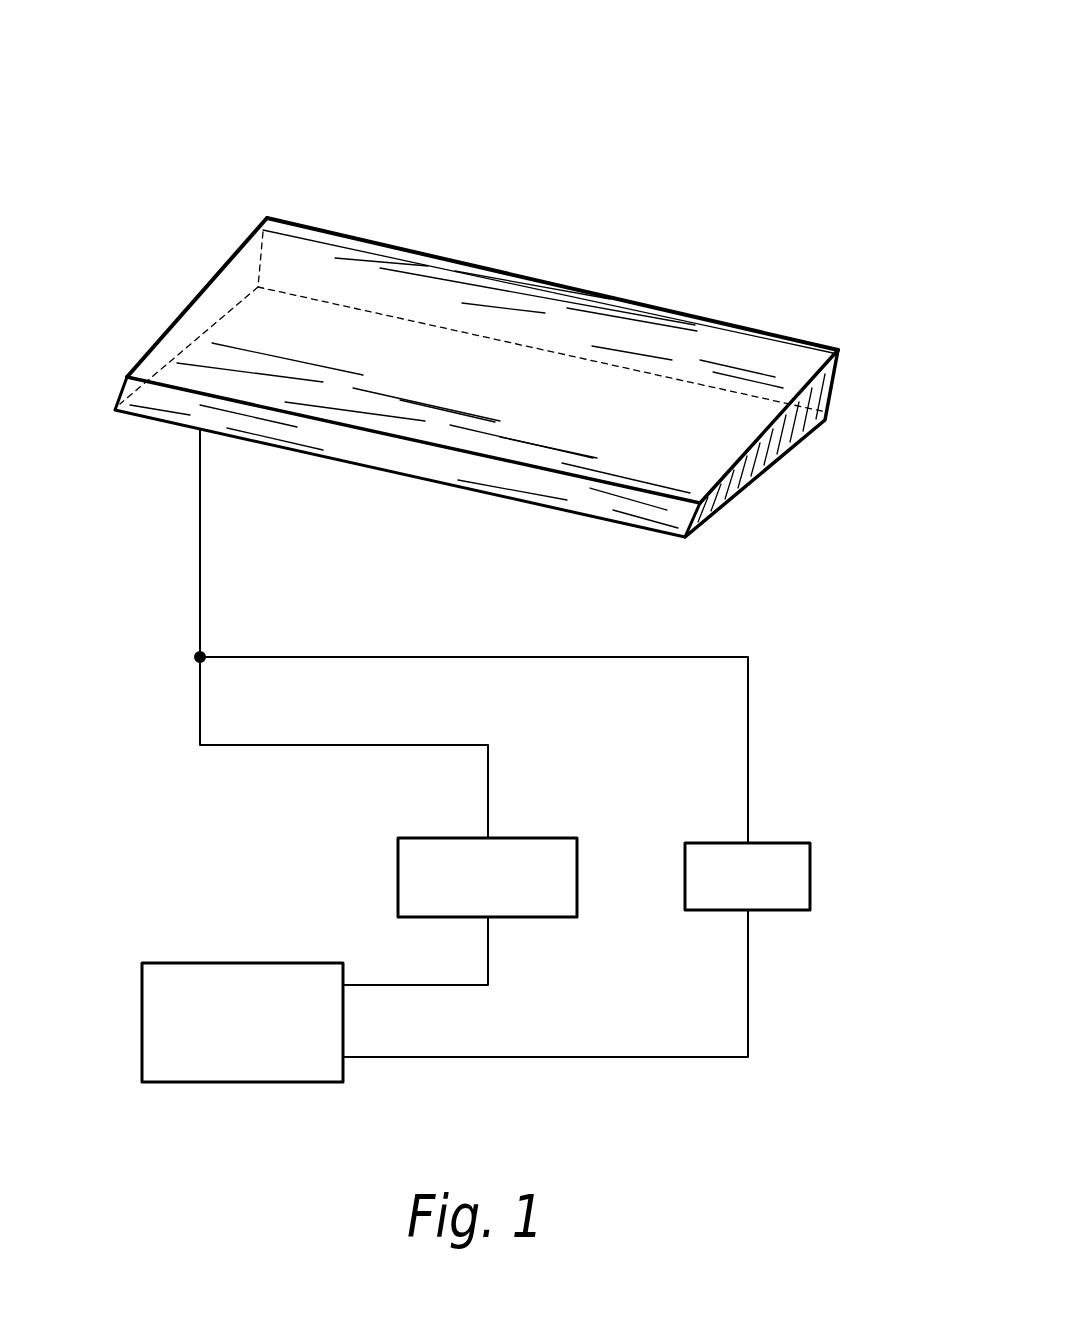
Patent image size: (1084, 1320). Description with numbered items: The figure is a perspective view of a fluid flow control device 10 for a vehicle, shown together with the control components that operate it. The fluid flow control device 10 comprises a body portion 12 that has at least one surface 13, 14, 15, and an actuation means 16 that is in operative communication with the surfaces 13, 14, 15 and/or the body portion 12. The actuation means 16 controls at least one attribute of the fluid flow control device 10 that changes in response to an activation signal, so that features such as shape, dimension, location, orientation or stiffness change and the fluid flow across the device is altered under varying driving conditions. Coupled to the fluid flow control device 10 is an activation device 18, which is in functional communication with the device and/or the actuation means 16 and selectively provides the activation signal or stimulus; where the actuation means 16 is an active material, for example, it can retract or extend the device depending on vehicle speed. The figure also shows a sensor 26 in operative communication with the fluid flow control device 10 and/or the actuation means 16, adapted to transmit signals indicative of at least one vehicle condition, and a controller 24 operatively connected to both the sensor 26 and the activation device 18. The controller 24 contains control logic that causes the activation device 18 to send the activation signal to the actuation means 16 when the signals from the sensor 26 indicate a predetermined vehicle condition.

The fluid flow control device 10 is at (628, 138).
The body portion 12 is at (836, 392).
The surface 13 is at (352, 337).
The surface 14 is at (761, 454).
The surface 15 is at (440, 478).
The actuation means 16 is at (600, 330).
The activation device 18 is at (531, 838).
The controller 24 is at (217, 962).
The sensor 26 is at (812, 862).